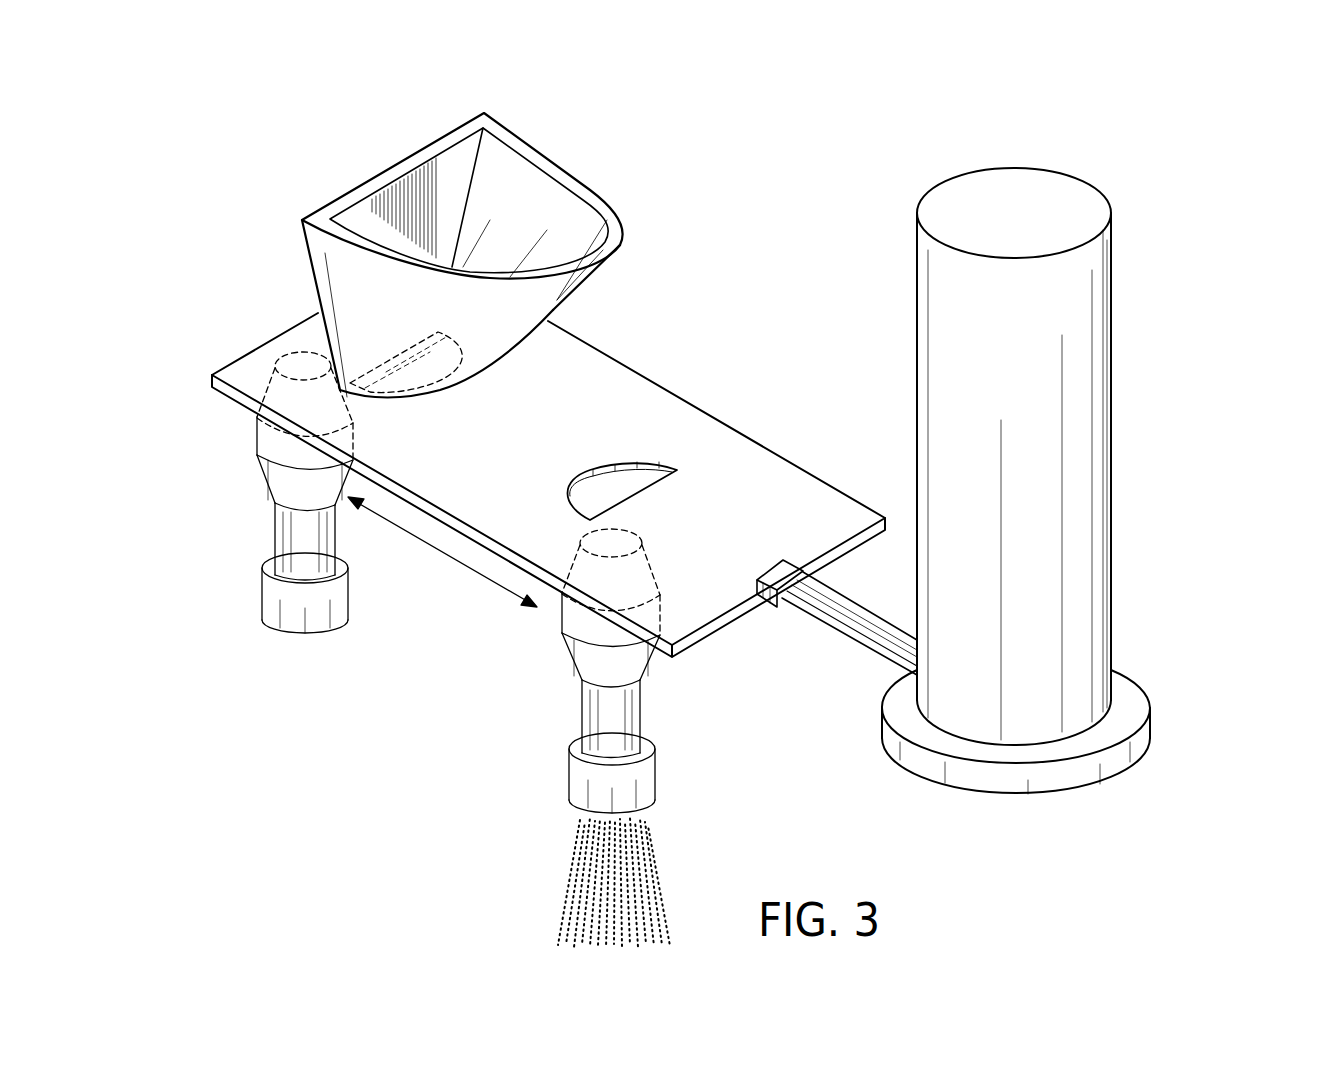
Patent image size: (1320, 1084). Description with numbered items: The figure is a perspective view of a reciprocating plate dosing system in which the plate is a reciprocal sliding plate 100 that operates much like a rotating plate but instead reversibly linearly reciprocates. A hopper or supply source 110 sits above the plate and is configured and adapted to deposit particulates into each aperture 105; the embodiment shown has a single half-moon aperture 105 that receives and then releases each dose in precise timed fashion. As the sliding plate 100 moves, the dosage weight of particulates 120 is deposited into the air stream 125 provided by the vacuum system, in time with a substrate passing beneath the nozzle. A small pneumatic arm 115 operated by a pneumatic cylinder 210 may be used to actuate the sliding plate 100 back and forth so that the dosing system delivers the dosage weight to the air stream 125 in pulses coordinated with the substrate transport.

The reciprocal sliding plate 100 is at (521, 493).
The half-moon aperture 105 is at (350, 330).
The hopper or supply source 110 is at (268, 116).
The pneumatic arm 115 is at (827, 645).
The particulates 120 is at (652, 845).
The air stream 125 is at (548, 714).
The pneumatic cylinder 210 is at (1162, 400).